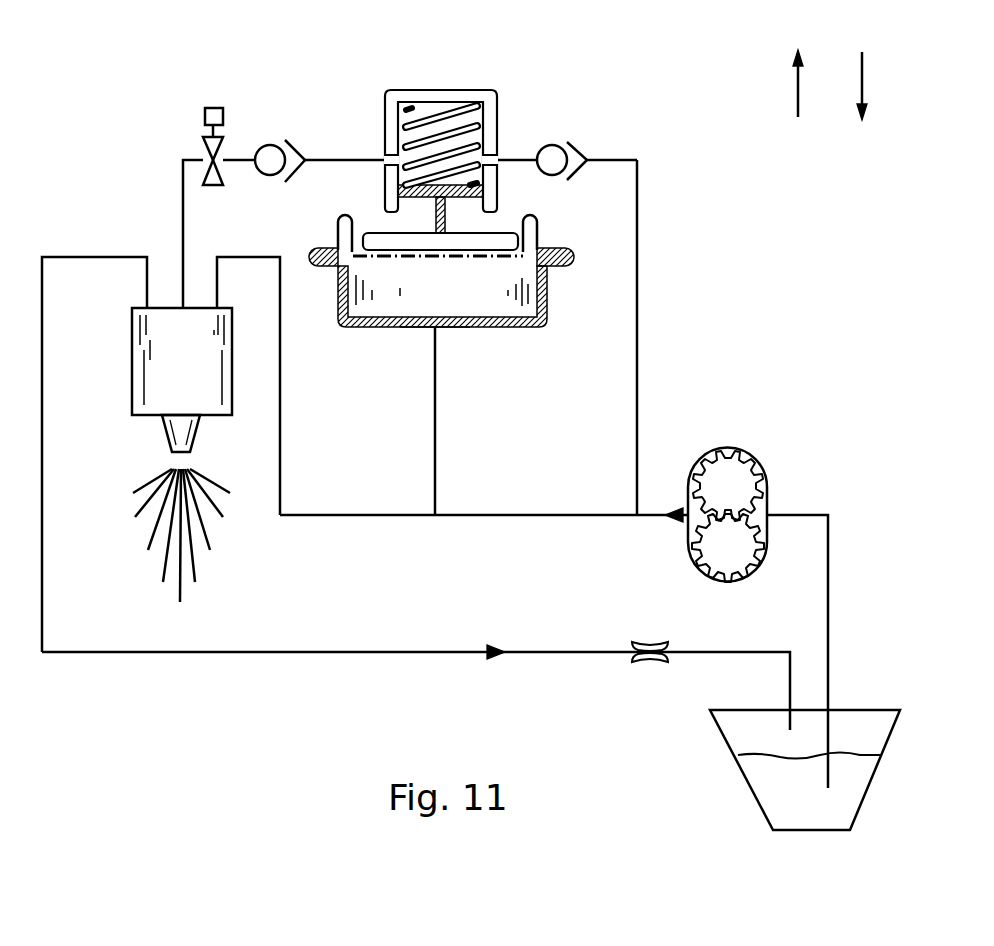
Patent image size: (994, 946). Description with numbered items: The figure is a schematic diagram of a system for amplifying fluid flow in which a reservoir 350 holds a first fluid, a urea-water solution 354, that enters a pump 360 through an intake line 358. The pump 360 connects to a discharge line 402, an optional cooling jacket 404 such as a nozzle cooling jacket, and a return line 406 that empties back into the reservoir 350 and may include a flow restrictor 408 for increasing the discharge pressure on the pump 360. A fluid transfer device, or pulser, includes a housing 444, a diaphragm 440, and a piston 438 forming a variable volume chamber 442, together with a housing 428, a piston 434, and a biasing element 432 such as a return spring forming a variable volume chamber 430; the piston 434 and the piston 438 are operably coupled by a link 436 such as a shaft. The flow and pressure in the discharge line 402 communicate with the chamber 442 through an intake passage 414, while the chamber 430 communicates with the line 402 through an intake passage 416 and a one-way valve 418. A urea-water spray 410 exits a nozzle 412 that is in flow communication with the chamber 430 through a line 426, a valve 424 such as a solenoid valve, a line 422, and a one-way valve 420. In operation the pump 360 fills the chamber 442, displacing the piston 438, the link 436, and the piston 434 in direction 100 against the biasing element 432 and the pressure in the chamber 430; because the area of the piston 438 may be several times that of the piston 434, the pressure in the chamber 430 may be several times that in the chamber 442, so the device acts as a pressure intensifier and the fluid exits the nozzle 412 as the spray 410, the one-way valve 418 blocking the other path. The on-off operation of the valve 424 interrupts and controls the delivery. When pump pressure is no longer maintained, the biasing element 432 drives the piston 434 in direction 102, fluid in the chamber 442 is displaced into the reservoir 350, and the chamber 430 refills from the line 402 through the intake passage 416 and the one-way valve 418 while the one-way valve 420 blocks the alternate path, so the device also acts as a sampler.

The direction 100 is at (802, 102).
The direction 102 is at (866, 103).
The reservoir 350 is at (718, 730).
The urea-water solution 354 is at (767, 792).
The intake line 358 is at (828, 630).
The pump 360 is at (746, 441).
The discharge line 402 is at (492, 517).
The cooling jacket 404 is at (132, 336).
The return line 406 is at (182, 654).
The flow restrictor 408 is at (648, 636).
The urea-water spray 410 is at (211, 540).
The nozzle 412 is at (165, 437).
The intake passage 414 is at (436, 444).
The intake passage 416 is at (637, 352).
The one-way valve 418 is at (565, 143).
The one-way valve 420 is at (271, 144).
The line 422 is at (232, 162).
The valve 424 is at (213, 106).
The line 426 is at (183, 198).
The housing 428 is at (485, 90).
The variable volume chamber 430 is at (430, 106).
The biasing element 432 is at (485, 138).
The piston 434 is at (447, 220).
The link 436 is at (490, 217).
The piston 438 is at (368, 234).
The diaphragm 440 is at (338, 236).
The variable volume chamber 442 is at (513, 310).
The housing 444 is at (456, 328).